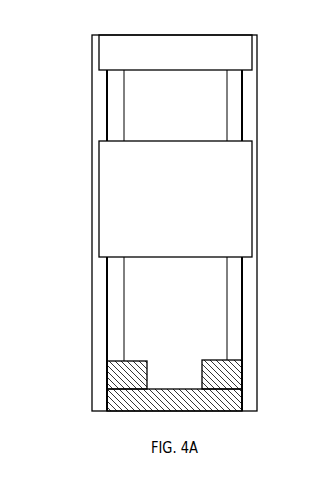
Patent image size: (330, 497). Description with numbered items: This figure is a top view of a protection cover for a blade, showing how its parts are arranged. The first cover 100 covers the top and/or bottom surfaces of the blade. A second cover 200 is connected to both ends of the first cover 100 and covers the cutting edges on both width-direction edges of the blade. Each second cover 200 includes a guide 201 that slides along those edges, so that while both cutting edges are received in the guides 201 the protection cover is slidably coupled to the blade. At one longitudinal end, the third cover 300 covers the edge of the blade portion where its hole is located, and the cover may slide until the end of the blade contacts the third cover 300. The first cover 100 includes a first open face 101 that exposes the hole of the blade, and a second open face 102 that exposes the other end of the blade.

The first cover 100 is at (233, 55).
The first open face 101 is at (130, 326).
The second open face 102 is at (148, 121).
The second cover 200 is at (103, 273).
The guide 201 is at (112, 90).
The third cover 300 is at (133, 401).